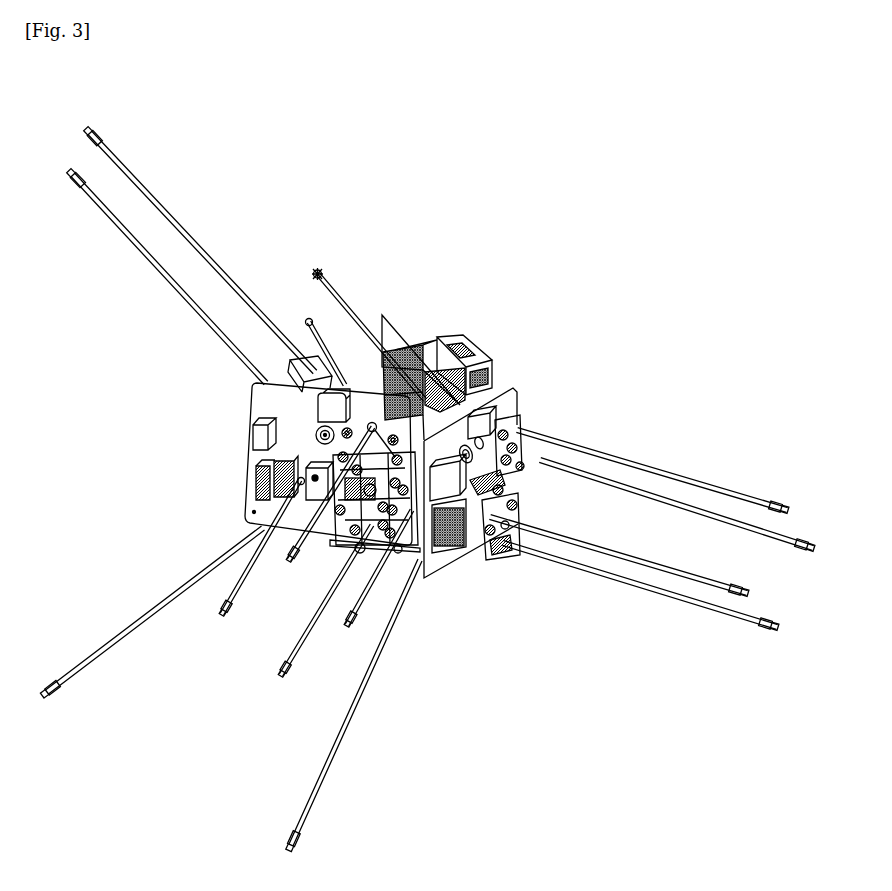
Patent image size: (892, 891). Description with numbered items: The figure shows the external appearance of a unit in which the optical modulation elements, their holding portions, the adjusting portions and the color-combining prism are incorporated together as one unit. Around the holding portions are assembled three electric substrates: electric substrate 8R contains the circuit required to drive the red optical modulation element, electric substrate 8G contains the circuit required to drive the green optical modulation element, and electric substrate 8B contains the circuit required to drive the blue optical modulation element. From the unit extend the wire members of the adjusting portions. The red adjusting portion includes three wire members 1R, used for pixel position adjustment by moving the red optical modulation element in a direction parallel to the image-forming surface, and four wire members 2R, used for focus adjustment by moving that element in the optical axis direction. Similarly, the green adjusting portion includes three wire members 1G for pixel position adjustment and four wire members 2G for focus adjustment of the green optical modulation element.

The wire member 1R is at (196, 243).
The wire member 1G is at (326, 275).
The wire member 2R is at (217, 618).
The wire member 2G is at (598, 447).
The electric substrate 8R is at (250, 446).
The electric substrate 8G is at (510, 387).
The electric substrate 8B is at (409, 329).